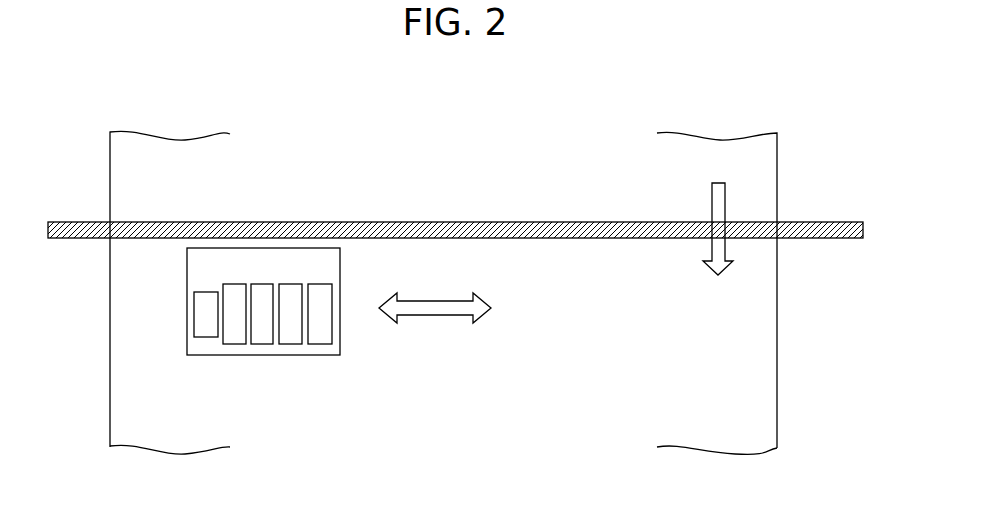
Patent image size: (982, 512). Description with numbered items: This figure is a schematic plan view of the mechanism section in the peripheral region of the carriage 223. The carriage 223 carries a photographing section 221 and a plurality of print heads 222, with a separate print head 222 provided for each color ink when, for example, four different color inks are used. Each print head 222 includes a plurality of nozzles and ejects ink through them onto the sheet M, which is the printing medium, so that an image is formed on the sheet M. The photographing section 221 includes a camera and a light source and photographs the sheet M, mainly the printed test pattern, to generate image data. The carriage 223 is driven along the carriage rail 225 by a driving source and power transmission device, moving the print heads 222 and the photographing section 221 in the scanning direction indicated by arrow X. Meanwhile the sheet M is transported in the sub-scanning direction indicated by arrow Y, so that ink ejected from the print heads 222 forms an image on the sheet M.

The sheet M is at (215, 156).
The photographing section 221 is at (207, 327).
The print head 222 is at (234, 337).
The carriage 223 is at (330, 263).
The carriage rail 225 is at (826, 217).
The scanning direction X is at (445, 307).
The sub-scanning direction Y is at (717, 278).